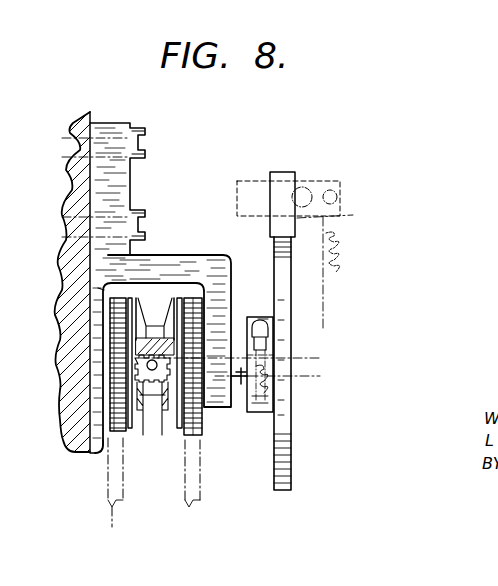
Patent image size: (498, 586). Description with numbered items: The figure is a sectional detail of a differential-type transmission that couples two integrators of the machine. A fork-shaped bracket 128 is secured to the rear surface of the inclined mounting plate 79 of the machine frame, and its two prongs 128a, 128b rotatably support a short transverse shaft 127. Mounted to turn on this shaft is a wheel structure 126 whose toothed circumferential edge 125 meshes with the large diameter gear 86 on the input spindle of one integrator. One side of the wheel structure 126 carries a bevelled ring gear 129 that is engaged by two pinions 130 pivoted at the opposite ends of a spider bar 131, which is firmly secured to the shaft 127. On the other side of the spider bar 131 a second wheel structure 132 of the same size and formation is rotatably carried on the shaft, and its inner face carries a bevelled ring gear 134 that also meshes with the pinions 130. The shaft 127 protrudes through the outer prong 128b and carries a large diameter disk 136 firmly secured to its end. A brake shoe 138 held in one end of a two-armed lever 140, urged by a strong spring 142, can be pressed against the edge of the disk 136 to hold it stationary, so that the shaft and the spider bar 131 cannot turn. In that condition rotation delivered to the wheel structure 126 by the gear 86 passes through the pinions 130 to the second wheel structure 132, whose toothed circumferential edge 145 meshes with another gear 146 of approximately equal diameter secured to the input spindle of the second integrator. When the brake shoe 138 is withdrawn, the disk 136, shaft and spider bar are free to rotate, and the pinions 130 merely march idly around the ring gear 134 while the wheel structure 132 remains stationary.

The inclined mounting plate 79 is at (65, 339).
The large diameter gear 86 is at (200, 488).
The toothed circumferential edge 125 is at (201, 283).
The wheel structure 126 is at (190, 287).
The transverse shaft 127 is at (241, 384).
The fork-shaped bracket 128 is at (127, 187).
The prong of bracket 128a is at (100, 458).
The outer prong of bracket 128b is at (222, 310).
The bevelled ring gear 129 is at (168, 430).
The pinions 130 is at (153, 422).
The spider bar 131 is at (157, 325).
The second wheel structure 132 is at (100, 290).
The bevelled ring gear 134 is at (140, 300).
The large diameter disk 136 is at (283, 477).
The brake shoe 138 is at (352, 215).
The two-armed lever 140 is at (250, 176).
The spring 142 is at (352, 249).
The toothed circumferential edge 145 is at (118, 433).
The gear 146 is at (108, 496).